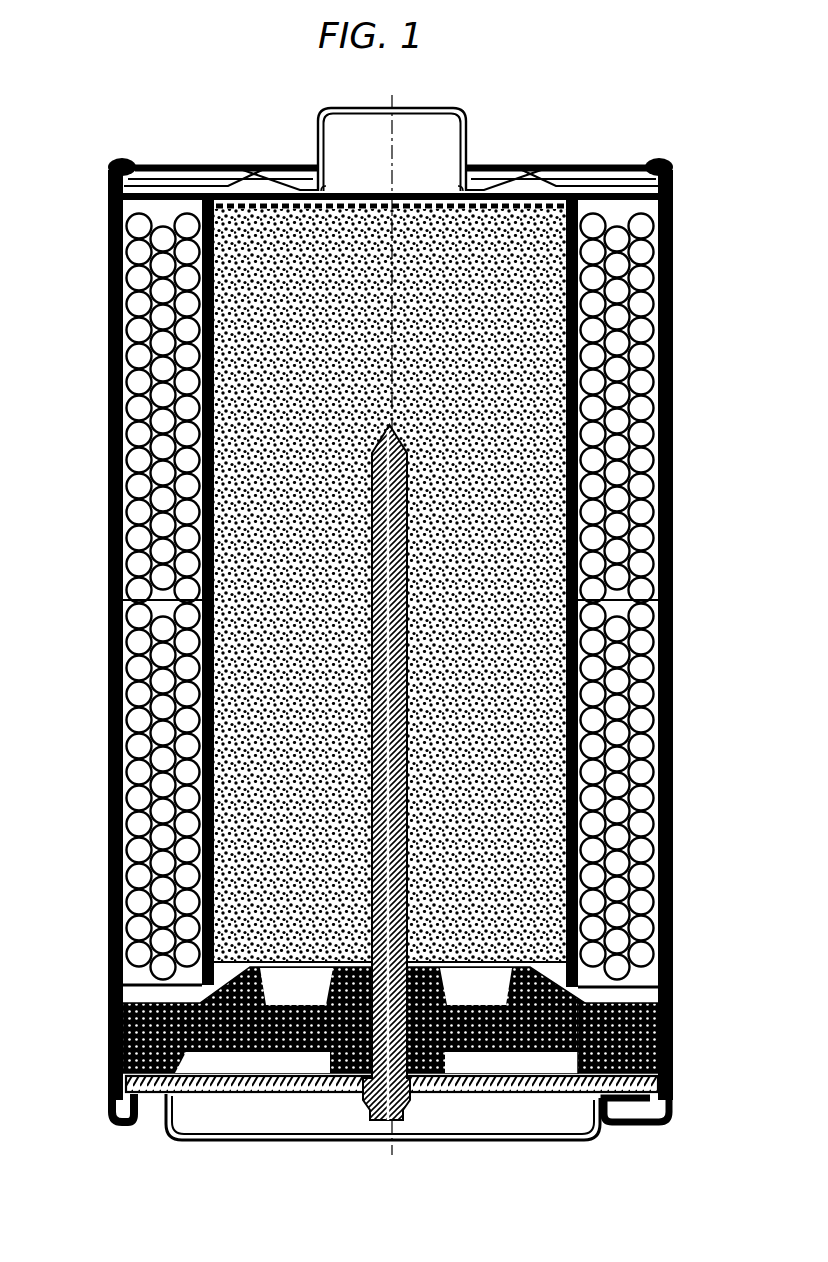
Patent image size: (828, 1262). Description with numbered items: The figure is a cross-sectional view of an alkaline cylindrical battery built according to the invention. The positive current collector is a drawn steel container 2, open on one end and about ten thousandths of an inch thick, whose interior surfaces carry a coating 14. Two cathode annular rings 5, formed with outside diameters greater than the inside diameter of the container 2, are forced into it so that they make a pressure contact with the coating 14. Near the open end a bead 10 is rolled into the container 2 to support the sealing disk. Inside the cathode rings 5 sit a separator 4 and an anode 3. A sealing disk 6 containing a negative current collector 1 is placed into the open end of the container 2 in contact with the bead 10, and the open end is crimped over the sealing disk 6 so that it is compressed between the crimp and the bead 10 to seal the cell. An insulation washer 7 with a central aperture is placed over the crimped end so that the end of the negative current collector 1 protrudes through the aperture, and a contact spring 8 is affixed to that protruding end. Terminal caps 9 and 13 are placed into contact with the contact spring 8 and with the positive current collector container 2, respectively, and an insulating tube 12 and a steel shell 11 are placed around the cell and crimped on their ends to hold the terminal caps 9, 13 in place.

The negative current collector 1 is at (375, 443).
The drawn steel container 2 is at (117, 350).
The anode 3 is at (303, 532).
The separator 4 is at (193, 632).
The cathode annular rings 5 is at (152, 762).
The sealing disk 6 is at (200, 958).
The insulation washer 7 is at (128, 1078).
The contact spring 8 is at (120, 1092).
The terminal cap 9 is at (162, 1130).
The bead 10 is at (660, 998).
The steel shell 11 is at (670, 556).
The insulating tube 12 is at (667, 809).
The terminal cap 13 is at (468, 131).
The coating 14 is at (668, 640).